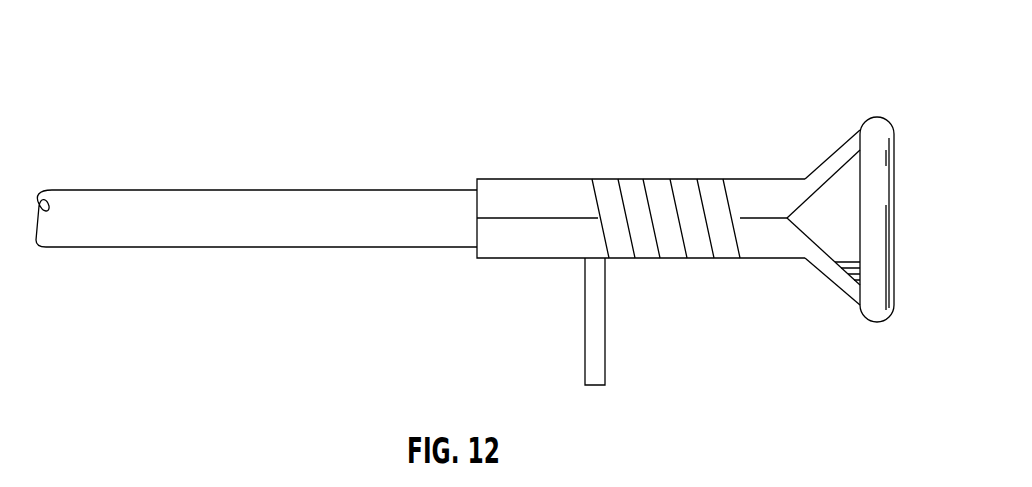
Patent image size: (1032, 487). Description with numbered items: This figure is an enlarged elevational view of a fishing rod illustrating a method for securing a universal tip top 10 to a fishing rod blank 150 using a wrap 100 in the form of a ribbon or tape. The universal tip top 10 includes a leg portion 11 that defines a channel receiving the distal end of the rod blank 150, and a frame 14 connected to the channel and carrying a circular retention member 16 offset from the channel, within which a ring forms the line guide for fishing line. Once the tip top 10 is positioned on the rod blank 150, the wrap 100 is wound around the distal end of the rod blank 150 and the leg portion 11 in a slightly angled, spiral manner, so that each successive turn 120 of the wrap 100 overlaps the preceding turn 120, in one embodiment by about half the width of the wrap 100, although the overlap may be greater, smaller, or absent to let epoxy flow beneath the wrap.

The universal tip top 10 is at (857, 67).
The leg portion 11 is at (530, 187).
The frame 14 is at (838, 282).
The circular retention member 16 is at (874, 218).
The wrap 100 is at (599, 336).
The turn 120 is at (685, 186).
The rod blank 150 is at (80, 203).